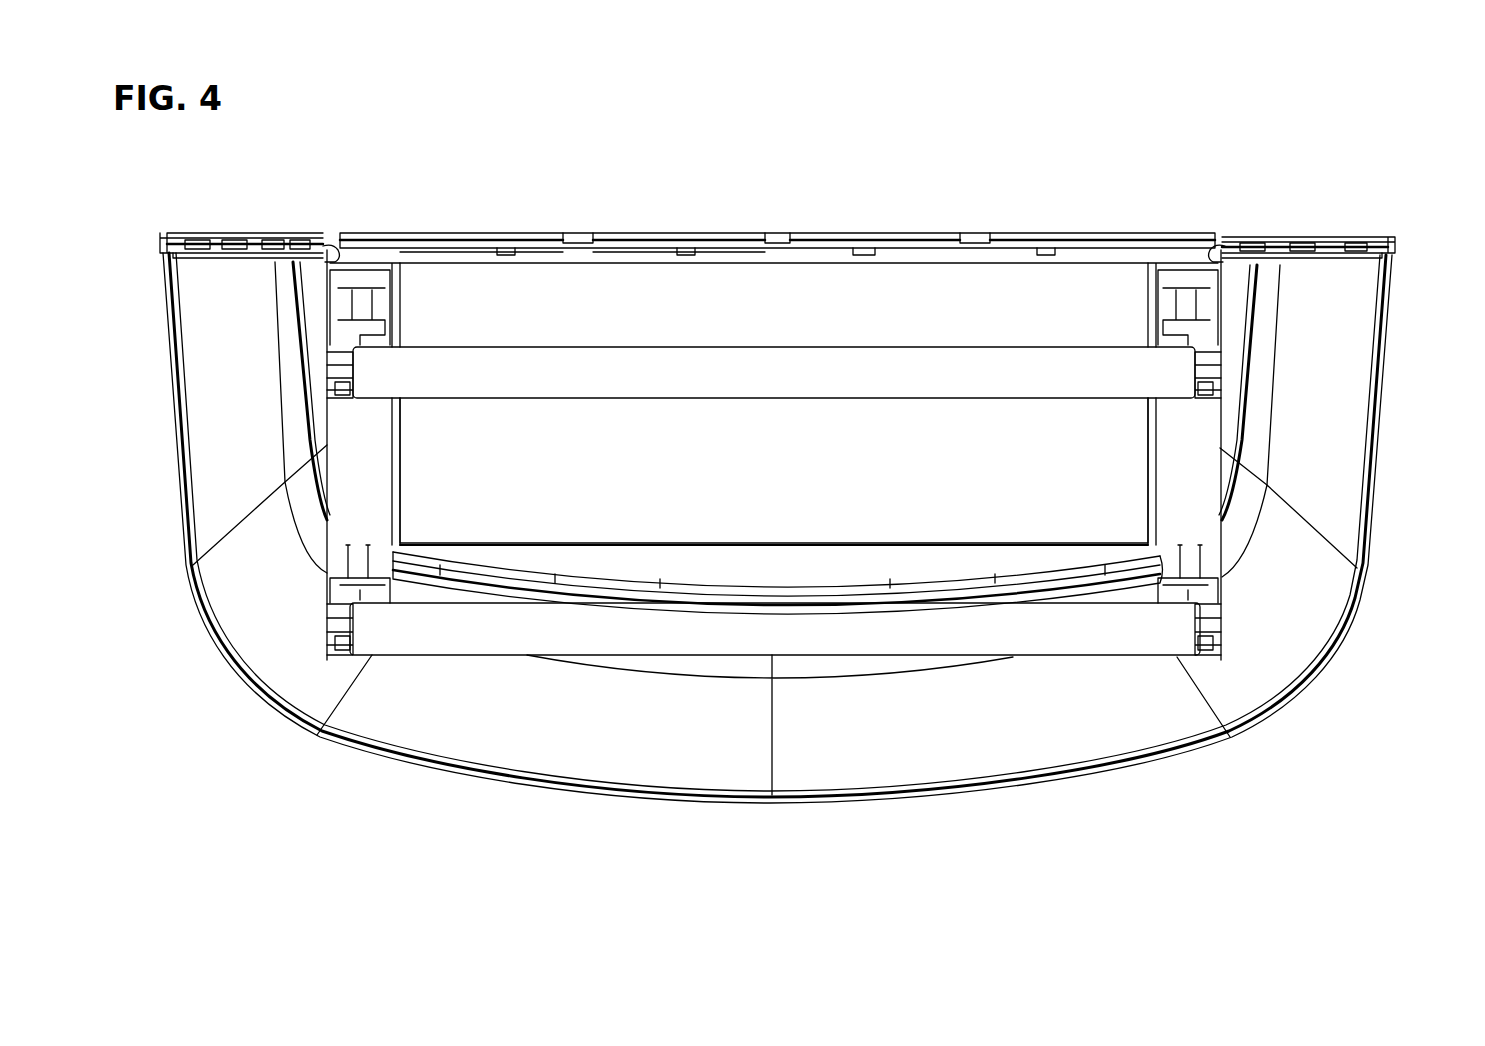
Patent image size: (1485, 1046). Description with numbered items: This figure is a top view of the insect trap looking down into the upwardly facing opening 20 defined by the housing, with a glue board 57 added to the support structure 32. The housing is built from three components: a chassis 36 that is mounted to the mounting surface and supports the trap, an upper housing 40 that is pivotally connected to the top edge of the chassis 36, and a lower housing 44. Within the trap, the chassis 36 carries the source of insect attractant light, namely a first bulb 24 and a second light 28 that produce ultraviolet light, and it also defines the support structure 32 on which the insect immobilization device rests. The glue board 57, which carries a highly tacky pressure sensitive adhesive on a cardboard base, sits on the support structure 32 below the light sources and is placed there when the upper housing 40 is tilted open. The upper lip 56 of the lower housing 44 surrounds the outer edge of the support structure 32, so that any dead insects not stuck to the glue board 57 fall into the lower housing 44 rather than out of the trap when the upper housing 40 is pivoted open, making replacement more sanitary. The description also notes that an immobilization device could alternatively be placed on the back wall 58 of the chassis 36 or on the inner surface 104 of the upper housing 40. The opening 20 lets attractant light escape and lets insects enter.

The opening 20 is at (1348, 640).
The first bulb 24 is at (430, 362).
The second light 28 is at (422, 622).
The support structure 32 is at (927, 290).
The chassis 36 is at (820, 242).
The upper housing 40 is at (1350, 363).
The lower housing 44 is at (308, 283).
The upper lip 56 is at (1253, 300).
The glue board 57 is at (740, 285).
The back wall 58 is at (608, 242).
The inner surface 104 is at (1253, 683).